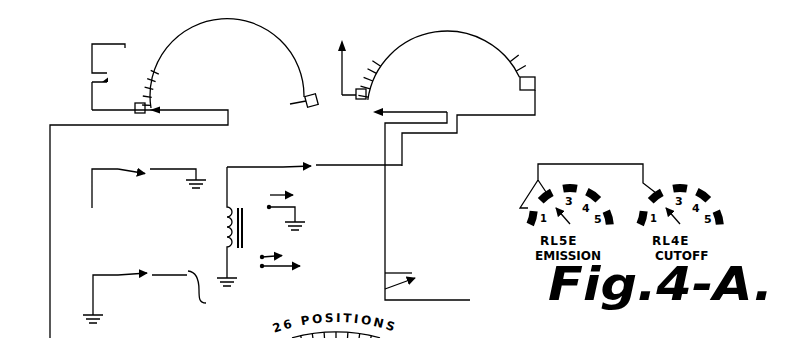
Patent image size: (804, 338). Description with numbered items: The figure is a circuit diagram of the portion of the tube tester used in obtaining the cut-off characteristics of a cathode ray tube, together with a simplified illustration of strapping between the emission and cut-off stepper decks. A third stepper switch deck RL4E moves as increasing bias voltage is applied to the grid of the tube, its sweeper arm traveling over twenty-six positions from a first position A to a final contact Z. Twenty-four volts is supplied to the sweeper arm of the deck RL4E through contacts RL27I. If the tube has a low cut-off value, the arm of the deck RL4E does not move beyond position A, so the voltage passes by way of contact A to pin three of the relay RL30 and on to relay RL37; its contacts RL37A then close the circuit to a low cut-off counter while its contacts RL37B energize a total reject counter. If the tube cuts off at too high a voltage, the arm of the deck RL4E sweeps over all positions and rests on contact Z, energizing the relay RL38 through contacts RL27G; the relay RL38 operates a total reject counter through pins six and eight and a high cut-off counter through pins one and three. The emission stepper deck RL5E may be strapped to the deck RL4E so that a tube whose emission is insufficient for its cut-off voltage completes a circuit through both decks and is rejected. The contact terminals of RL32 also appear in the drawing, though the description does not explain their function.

The relay RL32 contacts RL32 is at (113, 61).
The emission stepper deck RL5E is at (222, 61).
The third stepper switch deck RL4E is at (441, 154).
The relay RL30 is at (342, 52).
The relay contacts RL27G is at (314, 166).
The relay contacts RL27I is at (441, 289).
The relay RL38 is at (296, 226).
The relay contacts RL37A is at (149, 188).
The relay contacts RL37B is at (173, 289).